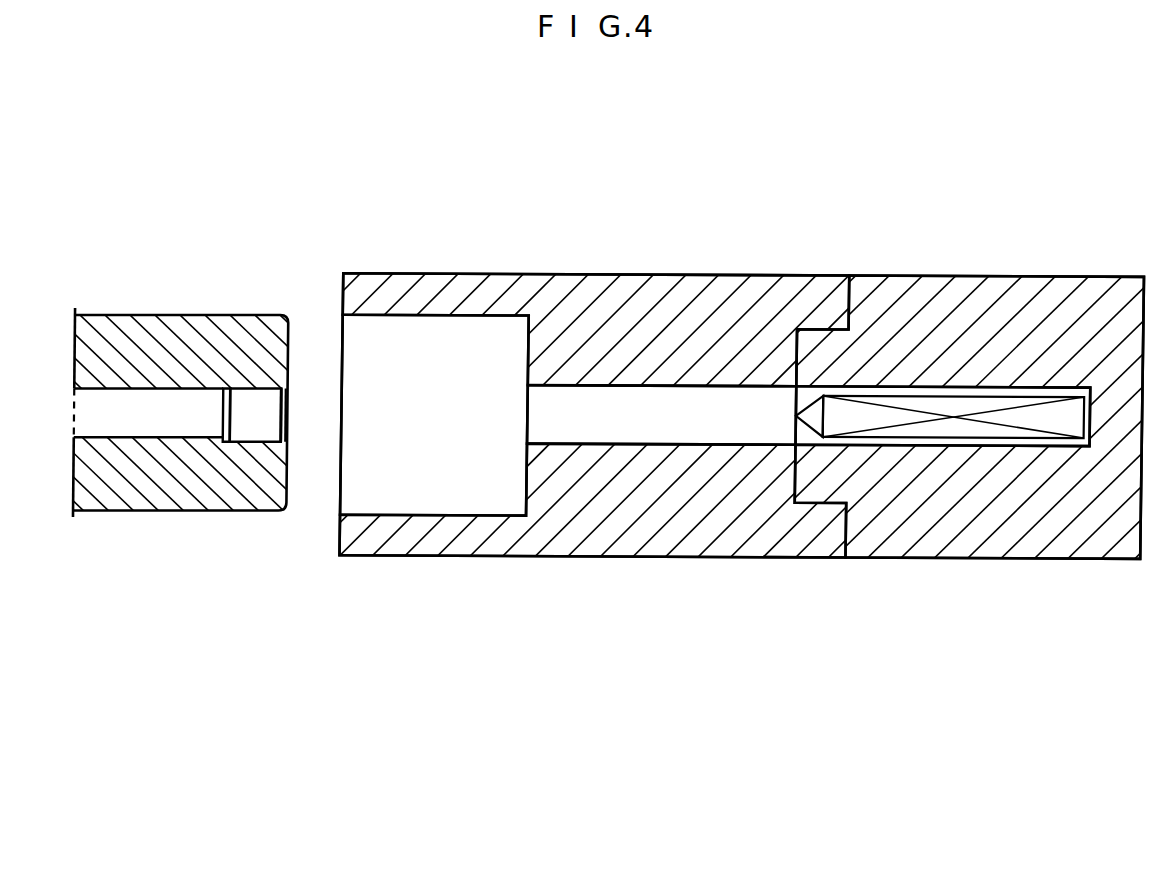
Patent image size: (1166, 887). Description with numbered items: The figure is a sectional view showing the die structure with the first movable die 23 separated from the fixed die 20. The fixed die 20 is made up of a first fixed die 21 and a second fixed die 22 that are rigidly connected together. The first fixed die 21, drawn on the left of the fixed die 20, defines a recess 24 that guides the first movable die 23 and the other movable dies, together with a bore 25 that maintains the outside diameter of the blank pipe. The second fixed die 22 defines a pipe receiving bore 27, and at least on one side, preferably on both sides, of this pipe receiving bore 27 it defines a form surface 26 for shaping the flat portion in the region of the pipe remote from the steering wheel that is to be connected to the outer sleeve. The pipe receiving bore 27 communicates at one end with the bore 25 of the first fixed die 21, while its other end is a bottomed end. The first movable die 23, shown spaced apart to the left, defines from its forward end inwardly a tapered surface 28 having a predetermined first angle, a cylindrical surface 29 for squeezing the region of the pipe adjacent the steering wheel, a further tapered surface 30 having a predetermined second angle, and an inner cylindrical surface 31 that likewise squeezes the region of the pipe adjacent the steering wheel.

The fixed die 20 is at (710, 247).
The first fixed die 21 is at (563, 284).
The second fixed die 22 is at (942, 286).
The first movable die 23 is at (157, 315).
The recess 24 is at (400, 429).
The bore 25 is at (642, 432).
The form surface 26 is at (960, 434).
The pipe receiving bore 27 is at (973, 396).
The tapered surface 28 is at (288, 420).
The cylindrical surface 29 is at (255, 438).
The tapered surface 30 is at (222, 408).
The cylindrical surface 31 is at (141, 424).